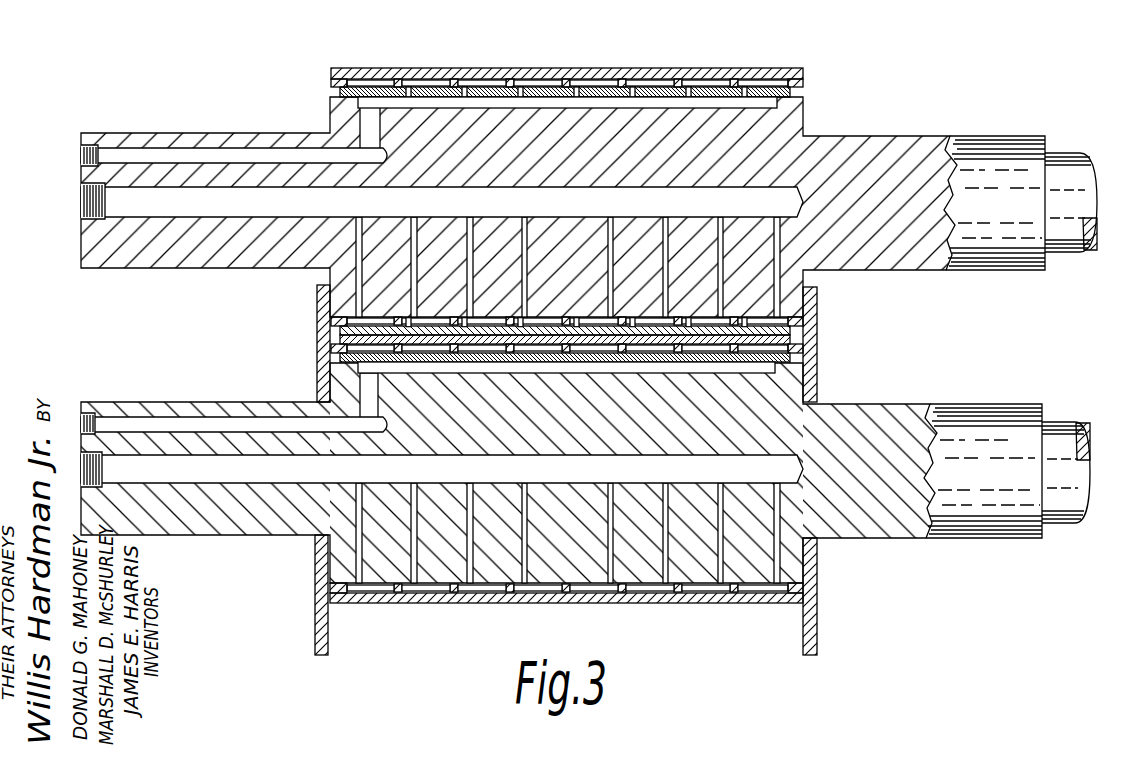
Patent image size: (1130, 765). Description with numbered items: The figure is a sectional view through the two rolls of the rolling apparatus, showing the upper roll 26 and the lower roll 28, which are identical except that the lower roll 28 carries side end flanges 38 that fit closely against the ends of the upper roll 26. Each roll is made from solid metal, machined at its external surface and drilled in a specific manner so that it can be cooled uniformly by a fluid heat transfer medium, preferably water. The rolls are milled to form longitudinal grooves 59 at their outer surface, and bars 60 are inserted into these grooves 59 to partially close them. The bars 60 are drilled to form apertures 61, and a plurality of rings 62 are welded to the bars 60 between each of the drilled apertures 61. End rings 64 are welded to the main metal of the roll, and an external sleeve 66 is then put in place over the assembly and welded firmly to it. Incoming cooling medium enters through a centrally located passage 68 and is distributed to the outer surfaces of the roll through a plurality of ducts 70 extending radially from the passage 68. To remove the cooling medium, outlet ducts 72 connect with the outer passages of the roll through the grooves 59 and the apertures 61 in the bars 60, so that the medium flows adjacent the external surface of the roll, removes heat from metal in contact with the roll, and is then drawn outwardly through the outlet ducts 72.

The roll 26 is at (808, 268).
The roll 28 is at (815, 528).
The end flanges 38 is at (328, 648).
The longitudinal grooves 59 is at (805, 92).
The bars 60 is at (769, 100).
The drilled apertures 61 is at (587, 85).
The rings 62 is at (693, 88).
The end rings 64 is at (332, 82).
The external sleeve 66 is at (380, 68).
The centrally located passage 68 is at (117, 208).
The ducts 70 is at (357, 232).
The outlet ducts 72 is at (147, 153).